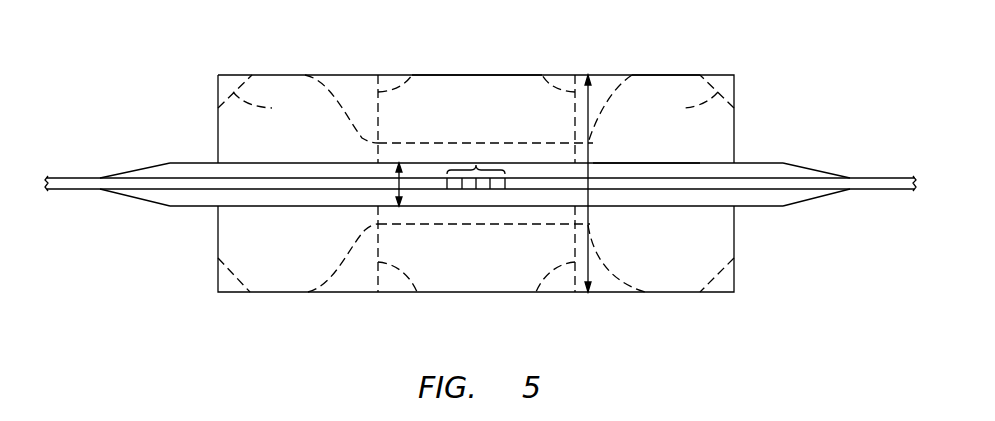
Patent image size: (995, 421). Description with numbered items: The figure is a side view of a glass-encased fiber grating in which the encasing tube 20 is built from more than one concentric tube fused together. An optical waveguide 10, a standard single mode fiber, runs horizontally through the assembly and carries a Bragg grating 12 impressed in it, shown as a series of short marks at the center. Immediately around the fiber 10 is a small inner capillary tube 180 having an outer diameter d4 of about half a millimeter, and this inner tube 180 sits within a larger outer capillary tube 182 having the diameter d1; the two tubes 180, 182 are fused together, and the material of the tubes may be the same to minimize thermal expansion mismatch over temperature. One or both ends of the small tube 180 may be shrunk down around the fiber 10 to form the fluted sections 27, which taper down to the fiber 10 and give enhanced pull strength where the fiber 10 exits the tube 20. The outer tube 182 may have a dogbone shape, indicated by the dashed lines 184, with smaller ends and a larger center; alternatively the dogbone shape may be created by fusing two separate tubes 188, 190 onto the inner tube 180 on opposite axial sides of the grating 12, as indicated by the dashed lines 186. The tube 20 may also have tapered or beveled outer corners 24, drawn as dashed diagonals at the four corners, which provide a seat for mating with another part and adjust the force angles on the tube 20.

The optical waveguide 10 is at (268, 182).
The Bragg grating 12 is at (476, 165).
The tube 20 is at (237, 74).
The beveled corners 24 is at (268, 108).
The fluted sections 27 is at (155, 170).
The inner capillary tube 180 is at (640, 163).
The outer capillary tube 182 is at (464, 80).
The dashed lines indicating dogbone shape 184 is at (614, 78).
The dashed lines indicating fused tube boundaries 186 is at (409, 77).
The first separate tube 188 is at (290, 87).
The second separate tube 190 is at (673, 85).
The outer tube diameter d1 is at (590, 218).
The inner tube outer diameter d4 is at (395, 180).